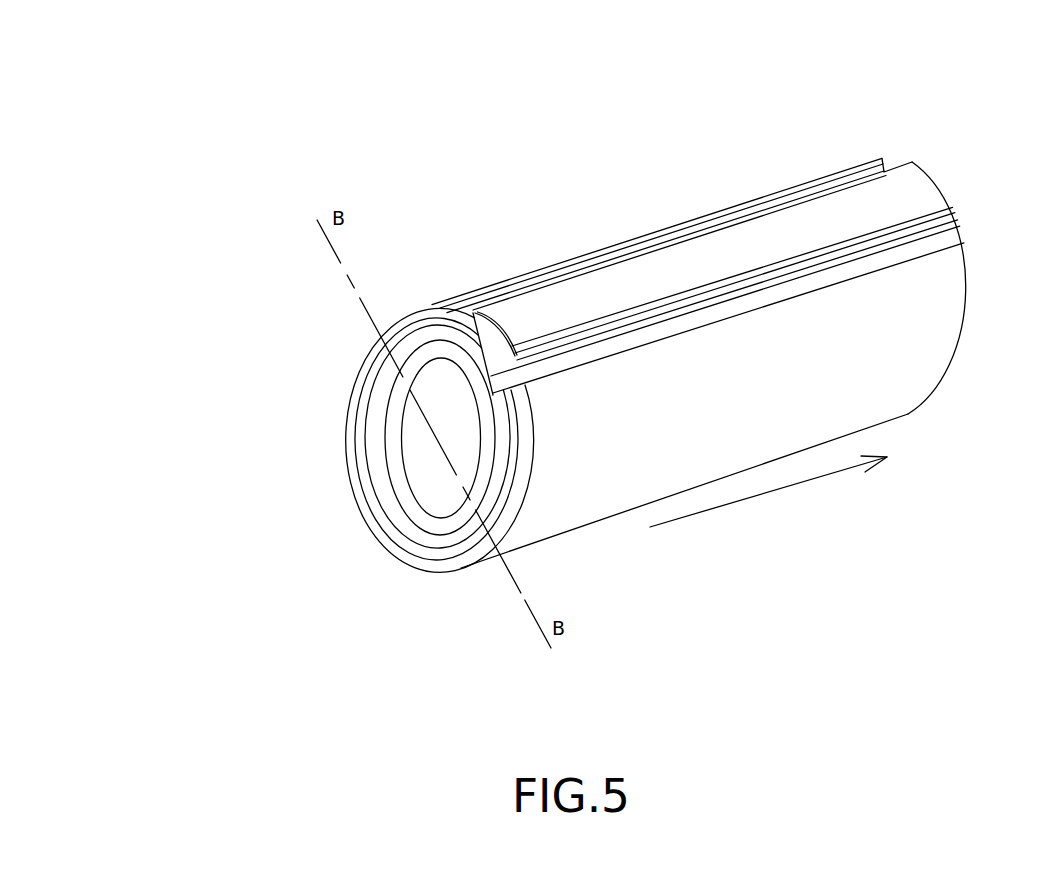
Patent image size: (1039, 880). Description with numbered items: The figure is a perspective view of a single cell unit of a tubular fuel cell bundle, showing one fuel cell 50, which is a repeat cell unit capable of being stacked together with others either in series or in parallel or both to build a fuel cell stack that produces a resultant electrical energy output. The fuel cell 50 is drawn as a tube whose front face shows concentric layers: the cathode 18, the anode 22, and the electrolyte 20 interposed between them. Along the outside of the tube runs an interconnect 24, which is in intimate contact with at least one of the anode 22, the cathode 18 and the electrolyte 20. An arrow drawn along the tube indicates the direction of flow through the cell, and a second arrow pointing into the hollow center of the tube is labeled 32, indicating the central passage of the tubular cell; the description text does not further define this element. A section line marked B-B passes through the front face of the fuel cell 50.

The cathode 18 is at (383, 342).
The electrolyte 20 is at (473, 313).
The anode 22 is at (490, 560).
The interconnect 24 is at (840, 233).
The lumen 32 is at (433, 432).
The fuel cell 50 is at (850, 130).